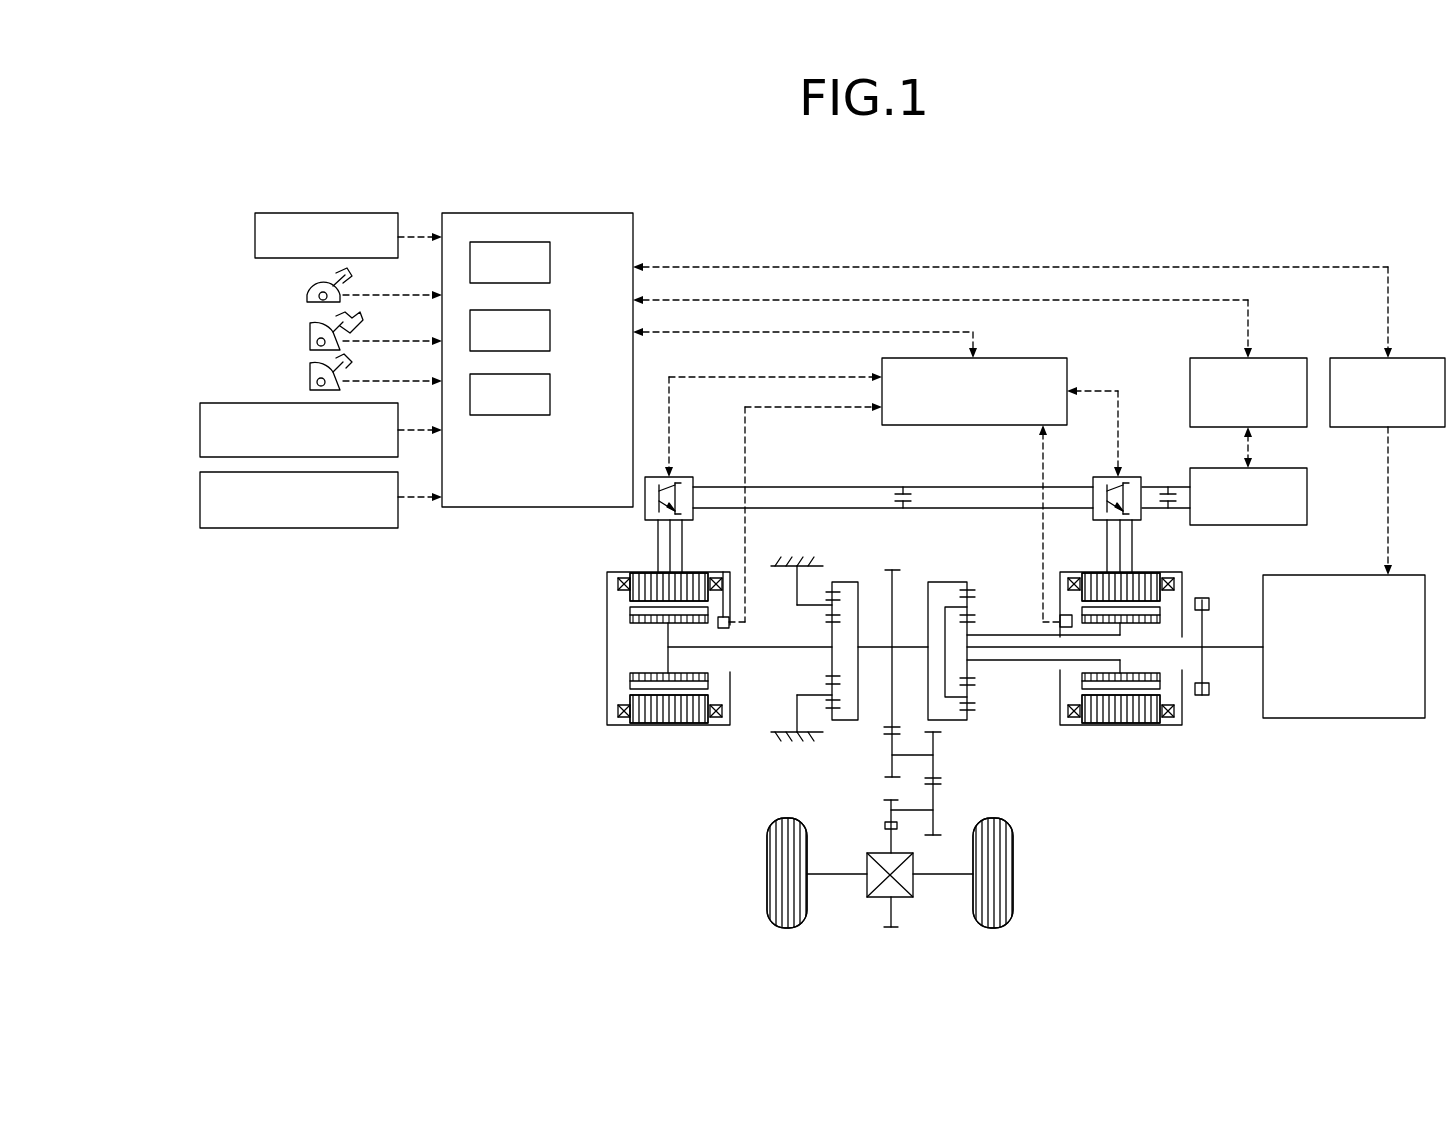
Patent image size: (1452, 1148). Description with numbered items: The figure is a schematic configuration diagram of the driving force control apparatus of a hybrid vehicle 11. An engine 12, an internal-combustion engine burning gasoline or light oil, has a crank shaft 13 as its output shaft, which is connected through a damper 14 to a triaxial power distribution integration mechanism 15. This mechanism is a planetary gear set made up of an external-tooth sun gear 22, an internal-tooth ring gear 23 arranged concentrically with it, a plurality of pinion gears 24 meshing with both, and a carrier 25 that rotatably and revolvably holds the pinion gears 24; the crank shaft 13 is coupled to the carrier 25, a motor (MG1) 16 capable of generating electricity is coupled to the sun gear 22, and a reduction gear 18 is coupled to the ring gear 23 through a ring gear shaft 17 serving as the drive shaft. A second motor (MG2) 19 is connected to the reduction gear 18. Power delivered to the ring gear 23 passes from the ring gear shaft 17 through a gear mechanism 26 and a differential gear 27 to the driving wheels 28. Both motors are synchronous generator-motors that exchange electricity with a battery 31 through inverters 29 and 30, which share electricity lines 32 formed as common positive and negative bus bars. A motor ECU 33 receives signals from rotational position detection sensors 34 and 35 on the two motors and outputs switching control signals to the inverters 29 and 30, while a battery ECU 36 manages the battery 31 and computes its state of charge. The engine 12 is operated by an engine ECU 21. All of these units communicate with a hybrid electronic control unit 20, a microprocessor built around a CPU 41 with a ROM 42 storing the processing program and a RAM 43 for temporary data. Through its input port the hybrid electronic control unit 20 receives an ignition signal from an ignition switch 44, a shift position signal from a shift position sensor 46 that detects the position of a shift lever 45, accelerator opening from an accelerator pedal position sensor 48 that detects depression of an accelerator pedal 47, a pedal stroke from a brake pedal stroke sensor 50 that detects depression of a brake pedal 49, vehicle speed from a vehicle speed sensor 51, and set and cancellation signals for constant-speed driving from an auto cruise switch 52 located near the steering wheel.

The hybrid vehicle 11 is at (1124, 230).
The engine 12 is at (1405, 575).
The crank shaft 13 is at (1232, 649).
The damper 14 is at (1200, 697).
The power distribution integration mechanism 15 is at (979, 562).
The motor (MG1) 16 is at (1128, 725).
The ring gear shaft 17 is at (877, 643).
The reduction gear 18 is at (835, 562).
The motor (MG2) 19 is at (638, 572).
The hybrid electronic control unit 20 is at (585, 213).
The engine ECU 21 is at (1408, 358).
The sun gear 22 is at (968, 666).
The ring gear 23 is at (968, 717).
The pinion gears 24 is at (968, 695).
The carrier 25 is at (938, 620).
The gear mechanism 26 is at (975, 795).
The differential gear 27 is at (913, 882).
The driving wheels 28 is at (767, 875).
The inverter 29 is at (1137, 477).
The inverter 30 is at (687, 477).
The battery 31 is at (1274, 525).
The electricity lines 32 is at (955, 508).
The motor ECU 33 is at (1025, 358).
The rotational position detection sensor 34 is at (1065, 615).
The rotational position detection sensor 35 is at (723, 570).
The battery ECU 36 is at (1270, 358).
The CPU 41 is at (551, 262).
The ROM 42 is at (551, 330).
The RAM 43 is at (551, 395).
The ignition switch 44 is at (255, 237).
The shift lever 45 is at (335, 275).
The shift position sensor 46 is at (307, 298).
The accelerator pedal 47 is at (335, 325).
The accelerator pedal position sensor 48 is at (310, 344).
The brake pedal 49 is at (335, 366).
The brake pedal stroke sensor 50 is at (310, 386).
The vehicle speed sensor 51 is at (200, 431).
The auto cruise switch 52 is at (200, 497).